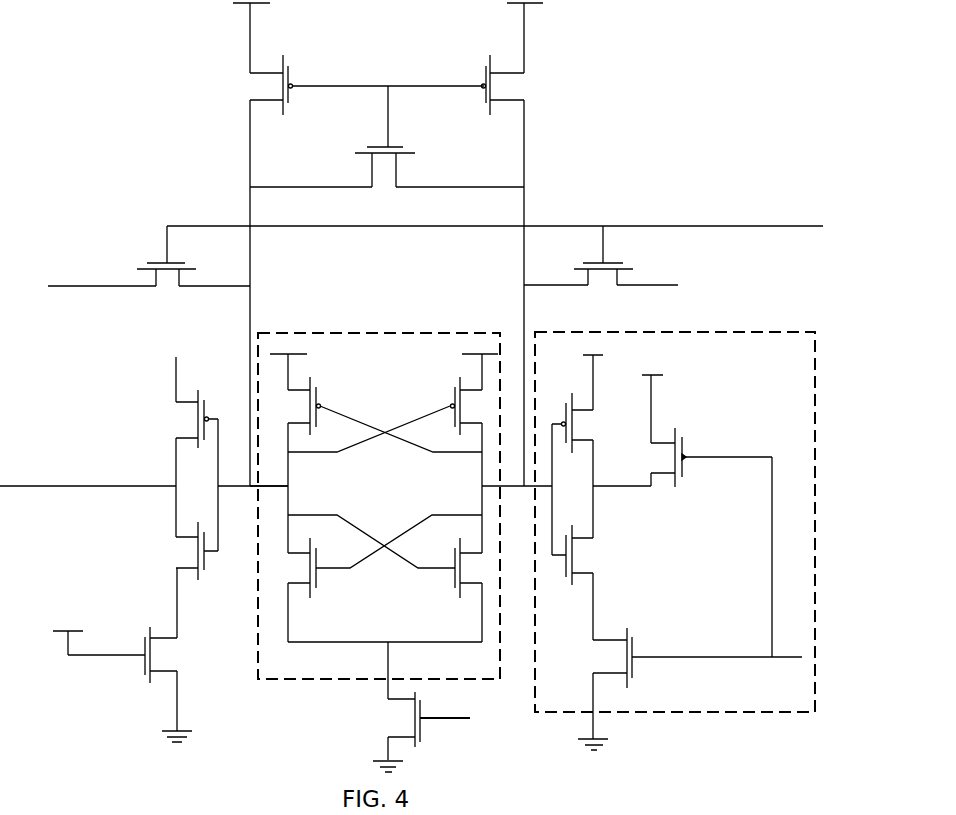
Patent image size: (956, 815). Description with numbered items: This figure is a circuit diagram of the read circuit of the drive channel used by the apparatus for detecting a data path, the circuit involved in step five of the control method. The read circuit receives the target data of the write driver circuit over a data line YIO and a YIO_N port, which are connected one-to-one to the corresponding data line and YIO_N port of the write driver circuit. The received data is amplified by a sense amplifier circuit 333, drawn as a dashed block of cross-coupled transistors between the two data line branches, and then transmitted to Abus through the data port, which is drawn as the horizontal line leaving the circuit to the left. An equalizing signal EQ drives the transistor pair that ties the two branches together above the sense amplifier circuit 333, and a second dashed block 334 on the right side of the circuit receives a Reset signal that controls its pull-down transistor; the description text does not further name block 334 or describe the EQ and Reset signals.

The sense amplifier circuit 333 is at (375, 333).
The reset unit 334 is at (675, 519).
The equalization signal line EQ is at (387, 121).
The data line YIO is at (149, 256).
The reset signal line Reset is at (724, 650).